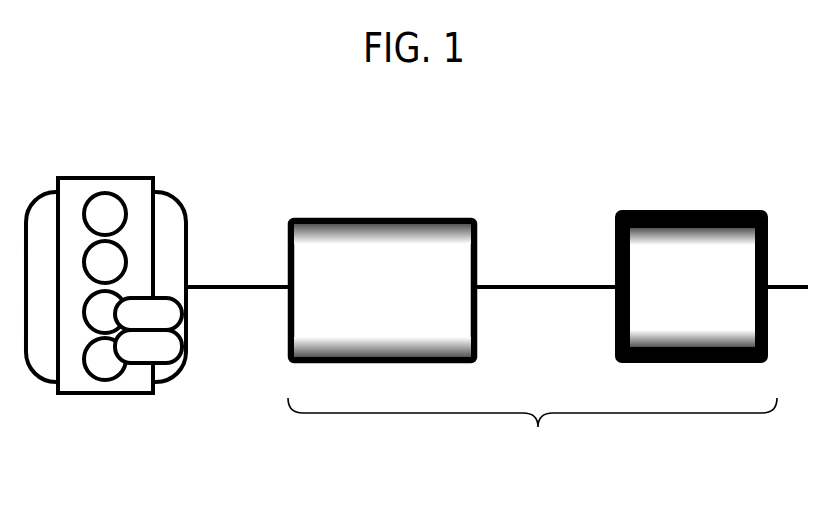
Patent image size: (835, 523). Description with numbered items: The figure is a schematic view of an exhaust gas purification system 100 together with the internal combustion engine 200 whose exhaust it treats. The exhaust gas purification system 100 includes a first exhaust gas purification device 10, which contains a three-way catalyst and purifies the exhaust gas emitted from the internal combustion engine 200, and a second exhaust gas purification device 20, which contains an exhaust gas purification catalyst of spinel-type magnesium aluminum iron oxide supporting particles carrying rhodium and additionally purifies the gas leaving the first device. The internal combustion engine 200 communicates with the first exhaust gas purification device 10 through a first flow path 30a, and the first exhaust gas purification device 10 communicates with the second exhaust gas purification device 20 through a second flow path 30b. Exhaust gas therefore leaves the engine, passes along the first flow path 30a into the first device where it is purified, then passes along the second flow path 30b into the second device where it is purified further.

The internal combustion engine 200 is at (82, 380).
The first flow path 30a is at (233, 285).
The first exhaust gas purification device 10 is at (367, 243).
The second flow path 30b is at (552, 285).
The second exhaust gas purification device 20 is at (690, 248).
The exhaust gas purification system 100 is at (532, 429).